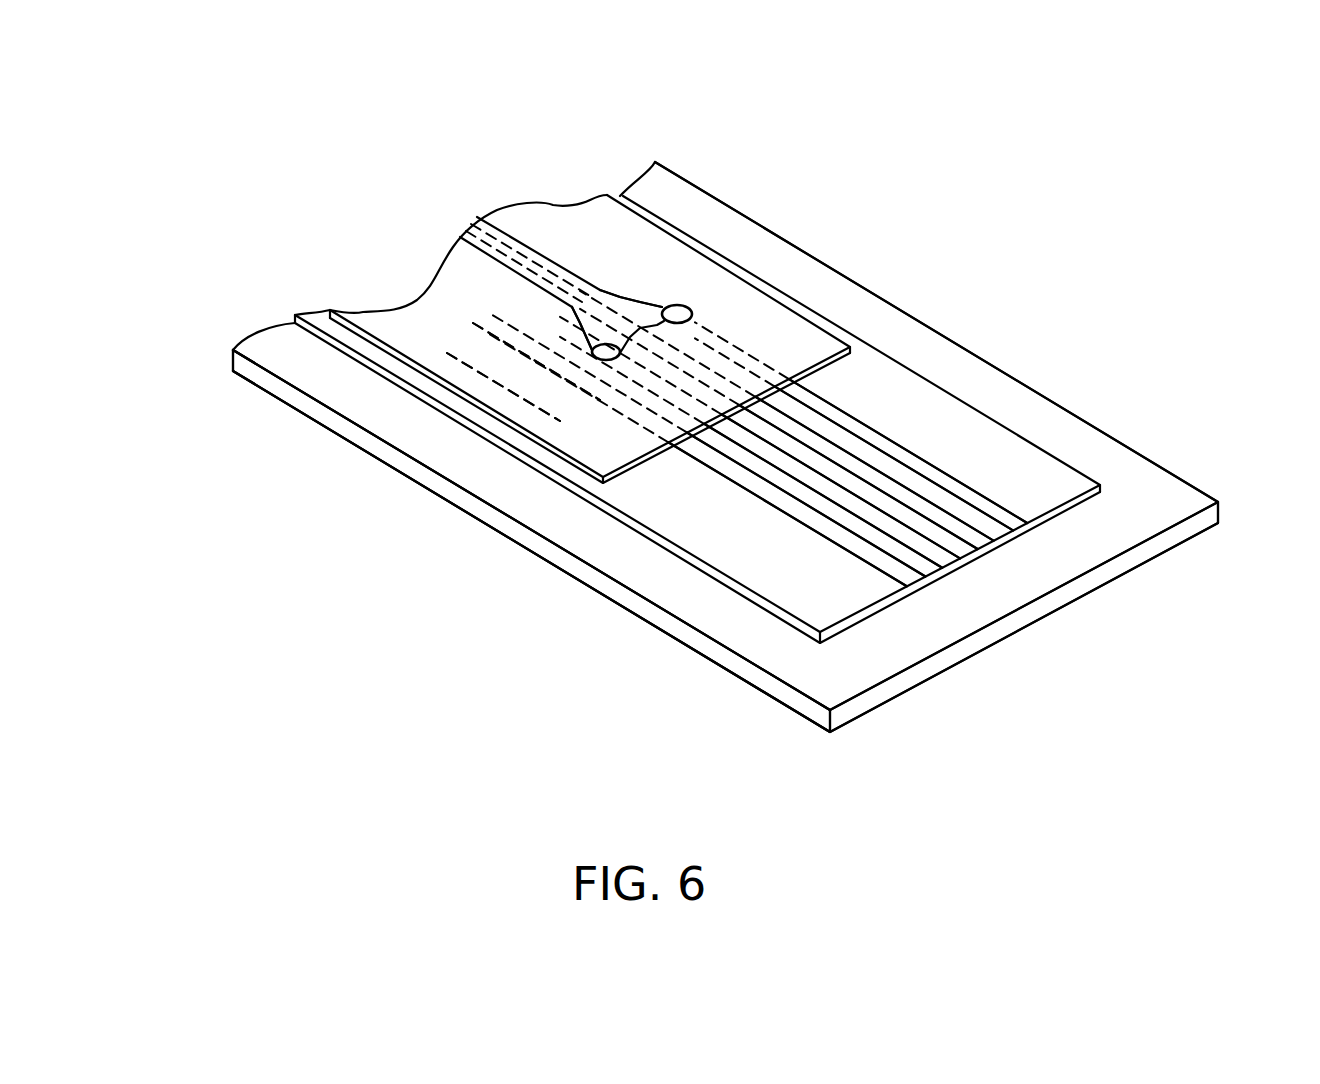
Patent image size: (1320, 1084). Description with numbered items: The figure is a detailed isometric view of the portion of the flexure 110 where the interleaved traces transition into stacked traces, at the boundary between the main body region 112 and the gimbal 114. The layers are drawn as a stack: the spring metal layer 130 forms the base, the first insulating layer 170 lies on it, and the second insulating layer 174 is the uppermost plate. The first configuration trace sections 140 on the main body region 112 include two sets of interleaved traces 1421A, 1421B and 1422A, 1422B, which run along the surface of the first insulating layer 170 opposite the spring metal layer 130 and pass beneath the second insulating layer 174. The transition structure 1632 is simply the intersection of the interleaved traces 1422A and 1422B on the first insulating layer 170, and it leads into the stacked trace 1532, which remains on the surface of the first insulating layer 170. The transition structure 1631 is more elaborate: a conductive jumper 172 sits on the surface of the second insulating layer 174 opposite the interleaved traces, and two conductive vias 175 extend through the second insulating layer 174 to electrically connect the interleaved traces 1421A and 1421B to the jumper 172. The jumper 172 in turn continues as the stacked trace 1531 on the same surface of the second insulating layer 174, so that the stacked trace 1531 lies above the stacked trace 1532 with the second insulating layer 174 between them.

The flexure 110 is at (1093, 310).
The main body region 112 is at (1167, 430).
The gimbal 114 is at (253, 402).
The spring metal layer 130 is at (580, 585).
The first configuration trace sections 140 is at (993, 507).
The interleaved trace 1421A is at (1000, 530).
The interleaved trace 1422A is at (965, 549).
The interleaved trace 1421B is at (930, 568).
The interleaved trace 1422B is at (893, 586).
The stacked trace 1531 is at (500, 262).
The stacked trace 1532 is at (527, 263).
The transition structure 1631 is at (622, 293).
The transition structure 1632 is at (503, 313).
The first insulating layer 170 is at (720, 555).
The conductive jumper 172 is at (652, 313).
The second insulating layer 174 is at (493, 413).
The conductive vias 175 is at (690, 317).